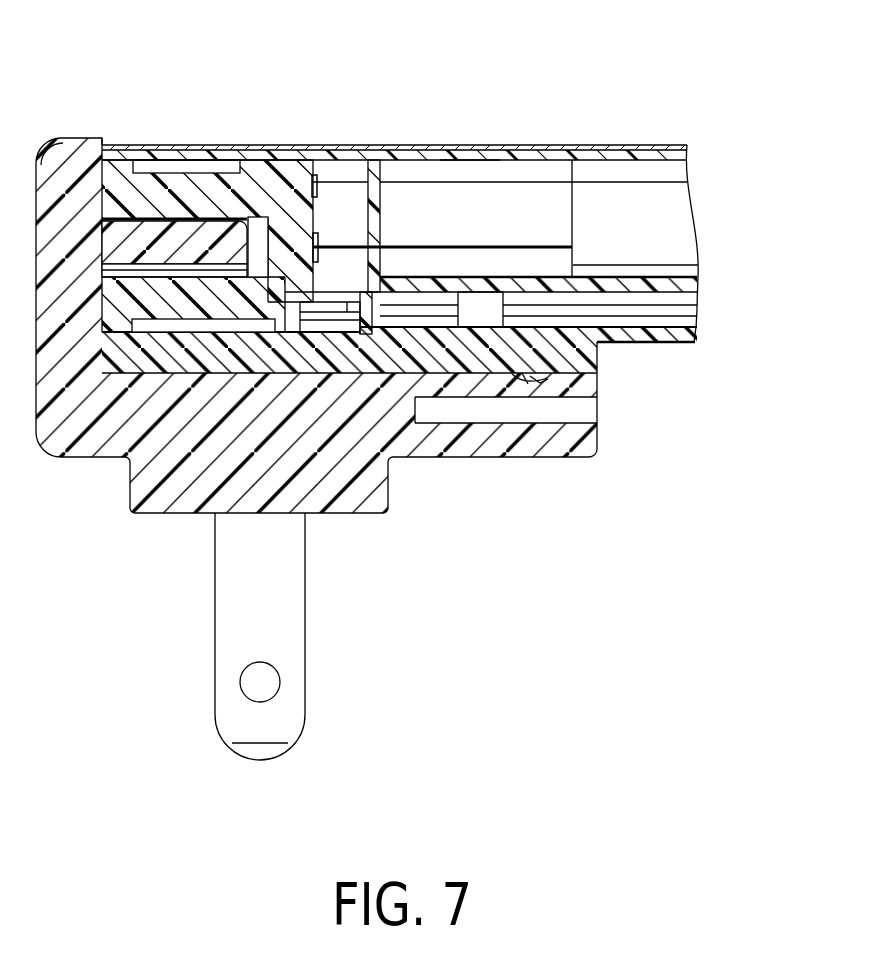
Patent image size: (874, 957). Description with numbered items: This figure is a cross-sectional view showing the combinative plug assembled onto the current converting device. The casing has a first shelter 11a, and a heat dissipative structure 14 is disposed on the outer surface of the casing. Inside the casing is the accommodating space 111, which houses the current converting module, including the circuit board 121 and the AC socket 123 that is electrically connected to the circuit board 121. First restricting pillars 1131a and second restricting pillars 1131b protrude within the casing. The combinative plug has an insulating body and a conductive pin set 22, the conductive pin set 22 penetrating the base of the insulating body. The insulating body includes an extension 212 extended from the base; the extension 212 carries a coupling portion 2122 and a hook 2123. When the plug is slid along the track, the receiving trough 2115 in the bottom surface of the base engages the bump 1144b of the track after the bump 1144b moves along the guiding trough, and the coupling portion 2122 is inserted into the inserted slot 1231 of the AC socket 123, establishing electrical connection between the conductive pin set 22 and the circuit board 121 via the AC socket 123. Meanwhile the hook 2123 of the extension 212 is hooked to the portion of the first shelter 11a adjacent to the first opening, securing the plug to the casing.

The extension 212 is at (332, 260).
The hook 2123 is at (110, 139).
The coupling portion 2122 is at (210, 230).
The inserted slot 1231 is at (259, 232).
The AC socket 123 is at (305, 188).
The first restricting pillars 1131a is at (373, 193).
The first shelter 11a is at (466, 158).
The accommodating space 111 is at (518, 197).
The heat dissipative structure 14 is at (588, 158).
The second restricting pillars 1131b is at (470, 306).
The circuit board 121 is at (673, 283).
The bump 1144b is at (523, 378).
The receiving trough 2115 is at (538, 381).
The conductive pin set 22 is at (280, 600).